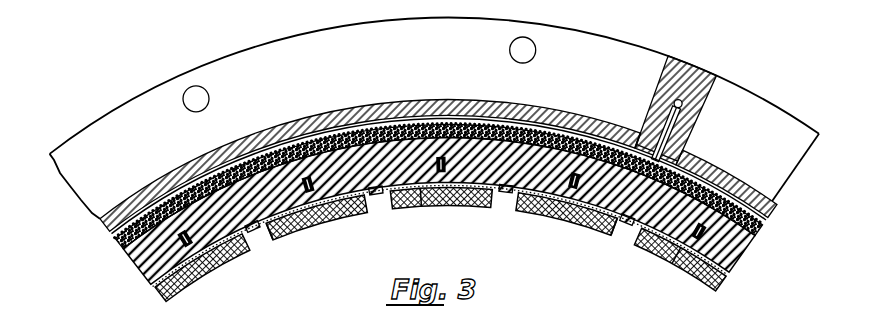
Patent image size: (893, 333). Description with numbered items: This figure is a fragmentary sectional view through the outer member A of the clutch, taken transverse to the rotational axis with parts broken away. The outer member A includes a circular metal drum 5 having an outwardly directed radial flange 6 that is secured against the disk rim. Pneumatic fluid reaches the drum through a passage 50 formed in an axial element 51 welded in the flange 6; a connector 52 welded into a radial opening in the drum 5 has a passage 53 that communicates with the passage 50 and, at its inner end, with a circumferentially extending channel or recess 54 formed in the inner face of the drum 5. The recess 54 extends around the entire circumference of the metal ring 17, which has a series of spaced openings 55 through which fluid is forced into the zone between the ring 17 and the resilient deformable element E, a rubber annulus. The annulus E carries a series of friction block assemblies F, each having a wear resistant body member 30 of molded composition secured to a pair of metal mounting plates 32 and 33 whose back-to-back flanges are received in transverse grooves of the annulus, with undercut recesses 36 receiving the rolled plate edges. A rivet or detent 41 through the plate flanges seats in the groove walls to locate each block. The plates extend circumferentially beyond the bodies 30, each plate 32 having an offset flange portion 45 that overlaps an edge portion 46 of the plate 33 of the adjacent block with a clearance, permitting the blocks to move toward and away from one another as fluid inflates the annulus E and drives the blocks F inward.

The outer member A is at (155, 69).
The radial flange 6 is at (252, 37).
The drum 5 is at (263, 117).
The axial element 51 is at (692, 63).
The connector 52 is at (629, 121).
The passage 53 is at (686, 137).
The passage 50 is at (675, 96).
The circumferentially extending channel or recess 54 is at (330, 121).
The spaced openings 55 is at (382, 118).
The metal ring 17 is at (480, 118).
The undercut recesses 36 is at (423, 157).
The rivet or detent 41 is at (445, 158).
The body member 30 is at (298, 223).
The mounting plate 32 is at (412, 200).
The mounting plate 33 is at (456, 199).
The edge portion 46 is at (243, 228).
The offset flange portion 45 is at (258, 228).
The resilient deformable element E is at (222, 252).
The friction block assemblies F is at (588, 233).